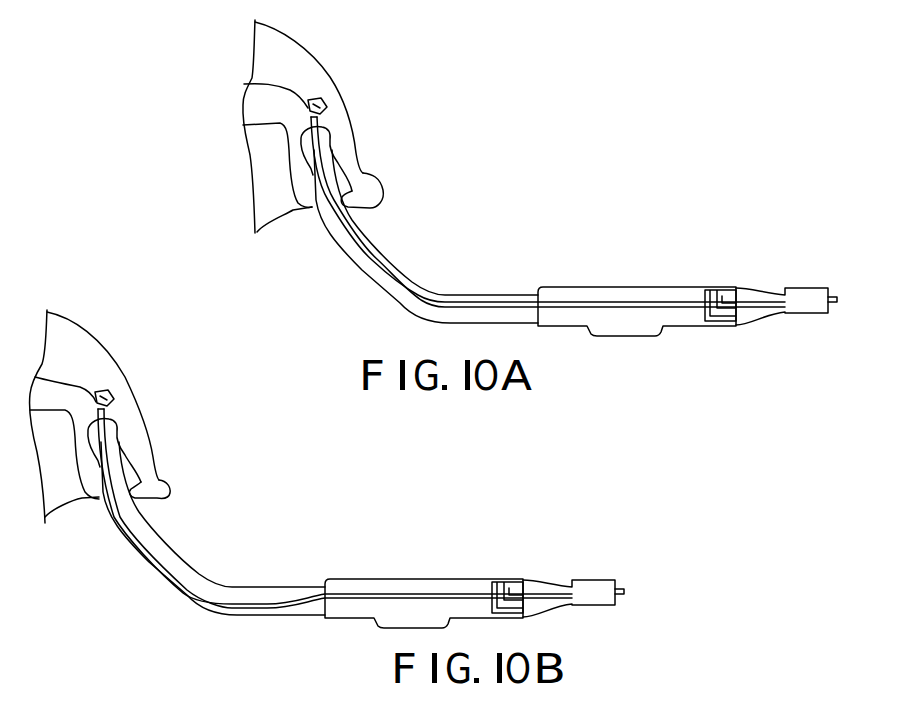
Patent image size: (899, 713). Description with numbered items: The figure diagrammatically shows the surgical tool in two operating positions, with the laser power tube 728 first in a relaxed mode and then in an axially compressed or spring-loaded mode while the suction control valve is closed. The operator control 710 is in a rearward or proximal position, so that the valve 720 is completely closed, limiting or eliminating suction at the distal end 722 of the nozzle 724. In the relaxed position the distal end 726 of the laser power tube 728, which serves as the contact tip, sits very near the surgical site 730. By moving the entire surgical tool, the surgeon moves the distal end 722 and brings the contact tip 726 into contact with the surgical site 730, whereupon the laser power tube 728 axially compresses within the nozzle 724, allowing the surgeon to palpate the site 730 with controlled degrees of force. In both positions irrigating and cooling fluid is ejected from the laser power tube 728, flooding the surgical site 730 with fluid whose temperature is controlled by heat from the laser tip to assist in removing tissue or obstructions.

In FIG. 10A, the operator control 710 is at (653, 327).
In FIG. 10A, the valve 720 is at (708, 290).
In FIG. 10A, the distal end of nozzle 722 is at (323, 133).
In FIG. 10B, the distal end of nozzle 722 is at (113, 424).
In FIG. 10A, the nozzle 724 is at (368, 243).
In FIG. 10B, the nozzle 724 is at (186, 563).
In FIG. 10A, the distal end of laser power tube 726 is at (297, 95).
In FIG. 10B, the distal end of laser power tube 726 is at (90, 404).
In FIG. 10A, the laser power tube 728 is at (328, 186).
In FIG. 10B, the laser power tube 728 is at (130, 531).
In FIG. 10A, the surgical site 730 is at (322, 103).
In FIG. 10B, the surgical site 730 is at (95, 394).